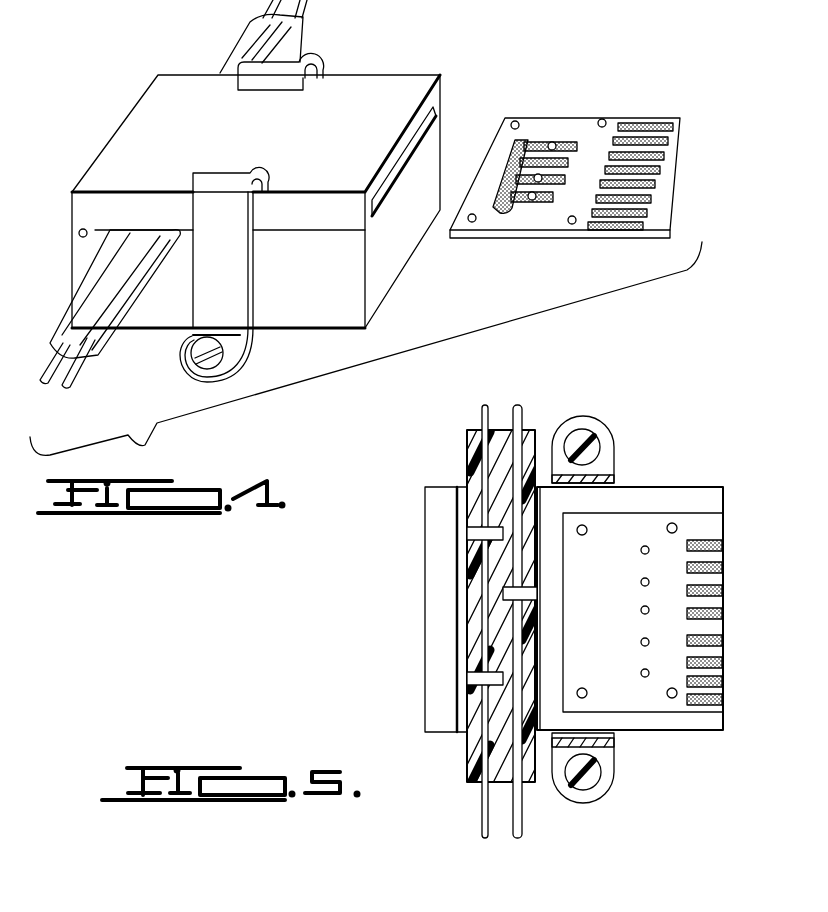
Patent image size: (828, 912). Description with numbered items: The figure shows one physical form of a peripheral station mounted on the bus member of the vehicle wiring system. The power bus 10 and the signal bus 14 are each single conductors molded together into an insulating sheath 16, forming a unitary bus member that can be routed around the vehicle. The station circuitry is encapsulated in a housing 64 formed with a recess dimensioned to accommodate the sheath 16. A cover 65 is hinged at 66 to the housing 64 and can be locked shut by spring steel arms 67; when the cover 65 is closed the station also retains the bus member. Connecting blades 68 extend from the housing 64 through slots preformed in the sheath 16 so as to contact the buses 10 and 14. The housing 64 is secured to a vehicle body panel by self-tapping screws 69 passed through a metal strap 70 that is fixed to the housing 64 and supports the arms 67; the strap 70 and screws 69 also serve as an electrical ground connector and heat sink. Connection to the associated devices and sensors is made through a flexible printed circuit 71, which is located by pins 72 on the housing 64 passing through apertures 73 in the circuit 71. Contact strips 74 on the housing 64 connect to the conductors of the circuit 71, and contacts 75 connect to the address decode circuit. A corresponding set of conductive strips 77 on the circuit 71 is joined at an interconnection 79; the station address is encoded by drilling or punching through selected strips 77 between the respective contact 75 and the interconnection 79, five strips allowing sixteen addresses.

In FIG. 4, the power bus 10 is at (47, 386).
In FIG. 5, the power bus 10 is at (485, 832).
In FIG. 4, the signal bus 14 is at (72, 382).
In FIG. 5, the signal bus 14 is at (522, 835).
In FIG. 4, the insulating sheath 16 is at (70, 318).
In FIG. 5, the insulating sheath 16 is at (467, 760).
In FIG. 4, the housing 64 is at (343, 297).
In FIG. 5, the housing 64 is at (712, 733).
In FIG. 4, the cover 65 is at (145, 112).
In FIG. 4, the hinge 66 is at (79, 233).
In FIG. 4, the spring steel arms 67 is at (233, 247).
In FIG. 5, the connecting blades 68 is at (467, 533).
In FIG. 4, the self-tapping screws 69 is at (230, 355).
In FIG. 5, the self-tapping screws 69 is at (592, 447).
In FIG. 4, the metal strap 70 is at (184, 355).
In FIG. 5, the metal strap 70 is at (600, 437).
In FIG. 4, the flexible printed circuit 71 is at (565, 198).
In FIG. 5, the pins 72 is at (585, 526).
In FIG. 4, the apertures 73 is at (515, 125).
In FIG. 5, the contact strips 74 is at (722, 545).
In FIG. 5, the contacts 75 is at (630, 546).
In FIG. 4, the conductive strips 77 is at (532, 200).
In FIG. 4, the interconnection 79 is at (507, 167).